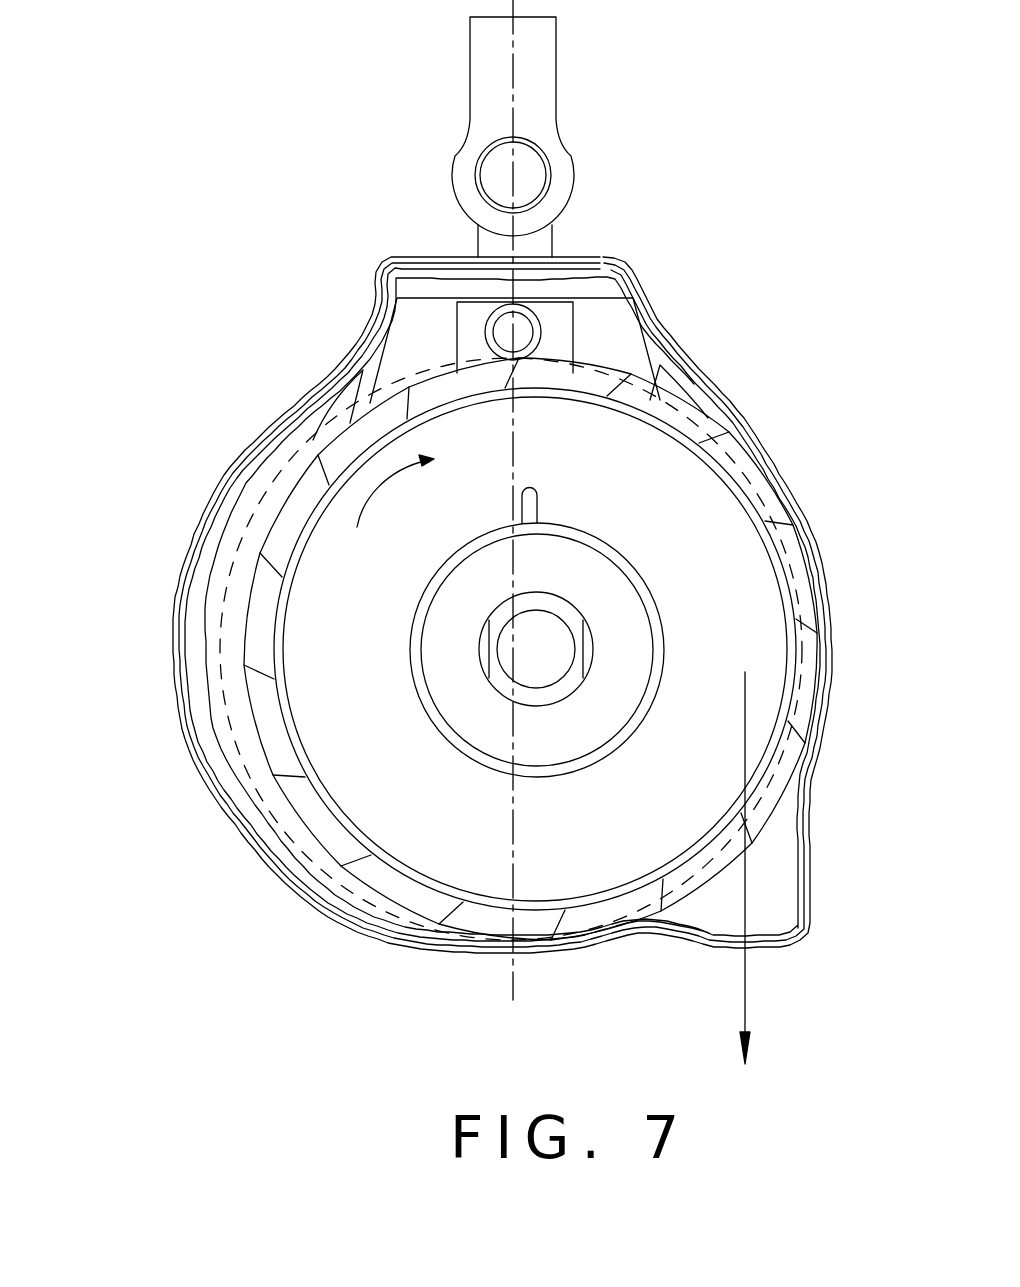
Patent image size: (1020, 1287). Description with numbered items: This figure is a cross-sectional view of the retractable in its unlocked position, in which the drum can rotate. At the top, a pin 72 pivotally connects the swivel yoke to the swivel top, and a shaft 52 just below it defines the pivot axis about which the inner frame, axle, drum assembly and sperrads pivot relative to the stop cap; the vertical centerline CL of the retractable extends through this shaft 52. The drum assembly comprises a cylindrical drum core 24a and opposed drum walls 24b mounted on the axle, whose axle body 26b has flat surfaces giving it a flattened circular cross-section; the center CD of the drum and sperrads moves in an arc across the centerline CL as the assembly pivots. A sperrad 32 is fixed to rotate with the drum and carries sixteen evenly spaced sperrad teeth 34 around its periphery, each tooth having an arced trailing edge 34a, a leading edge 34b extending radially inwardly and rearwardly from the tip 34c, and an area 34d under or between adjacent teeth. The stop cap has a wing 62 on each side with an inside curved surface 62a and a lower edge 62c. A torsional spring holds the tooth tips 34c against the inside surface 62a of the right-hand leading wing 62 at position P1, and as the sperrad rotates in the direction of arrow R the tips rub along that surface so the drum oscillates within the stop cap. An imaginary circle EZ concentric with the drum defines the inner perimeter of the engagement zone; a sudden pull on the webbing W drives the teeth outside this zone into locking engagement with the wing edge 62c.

The pin 72 is at (515, 177).
The shaft 52 is at (500, 330).
The wing 62 is at (328, 373).
The curved surface 62a is at (677, 350).
The lower edge 62c is at (272, 495).
The position P1 is at (730, 430).
The engagement zone circle EZ is at (222, 622).
The sperrad teeth 34 is at (300, 823).
The trailing edge 34a is at (285, 793).
The leading edge 34b is at (278, 768).
The tip 34c is at (385, 905).
The area 34d is at (257, 665).
The sperrad 32 is at (385, 905).
The drum core 24a is at (617, 745).
The drum wall 24b is at (384, 762).
The axle body 26b is at (522, 693).
The center of the drum CD is at (535, 650).
The vertical centerline CL is at (513, 652).
The arrow R is at (392, 488).
The webbing W is at (748, 972).